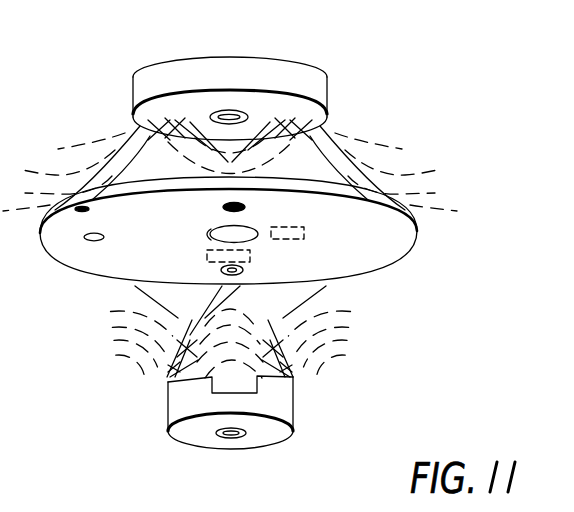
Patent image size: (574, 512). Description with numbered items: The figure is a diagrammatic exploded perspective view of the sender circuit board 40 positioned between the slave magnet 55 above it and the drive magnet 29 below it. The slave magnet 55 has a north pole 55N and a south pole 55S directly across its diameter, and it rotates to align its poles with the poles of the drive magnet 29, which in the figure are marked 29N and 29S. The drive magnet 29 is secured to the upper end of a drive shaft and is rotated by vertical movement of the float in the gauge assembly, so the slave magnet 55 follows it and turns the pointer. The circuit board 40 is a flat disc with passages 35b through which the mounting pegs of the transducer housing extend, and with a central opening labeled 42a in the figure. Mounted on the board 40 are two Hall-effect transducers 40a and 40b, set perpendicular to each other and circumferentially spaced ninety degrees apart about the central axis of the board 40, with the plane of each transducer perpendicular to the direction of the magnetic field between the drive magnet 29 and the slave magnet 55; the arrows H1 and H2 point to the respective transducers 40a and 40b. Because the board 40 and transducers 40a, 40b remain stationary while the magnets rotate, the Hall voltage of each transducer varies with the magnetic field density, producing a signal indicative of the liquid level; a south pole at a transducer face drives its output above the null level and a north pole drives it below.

The slave magnet 55 is at (196, 52).
The south pole of slave magnet 55S is at (133, 98).
The north pole of slave magnet 55N is at (328, 98).
The transducer circuit board 40 is at (434, 213).
The Hall-effect transducer 40a is at (313, 226).
The Hall-effect transducer 40b is at (250, 256).
The passage 35b is at (223, 207).
The central hole of disc 42a is at (206, 238).
The first magnetic field H1 is at (312, 234).
The second magnetic field H2 is at (252, 258).
The drive magnet 29 is at (280, 458).
The north pole of lower magnet 29N is at (168, 407).
The south pole of lower magnet 29S is at (293, 410).